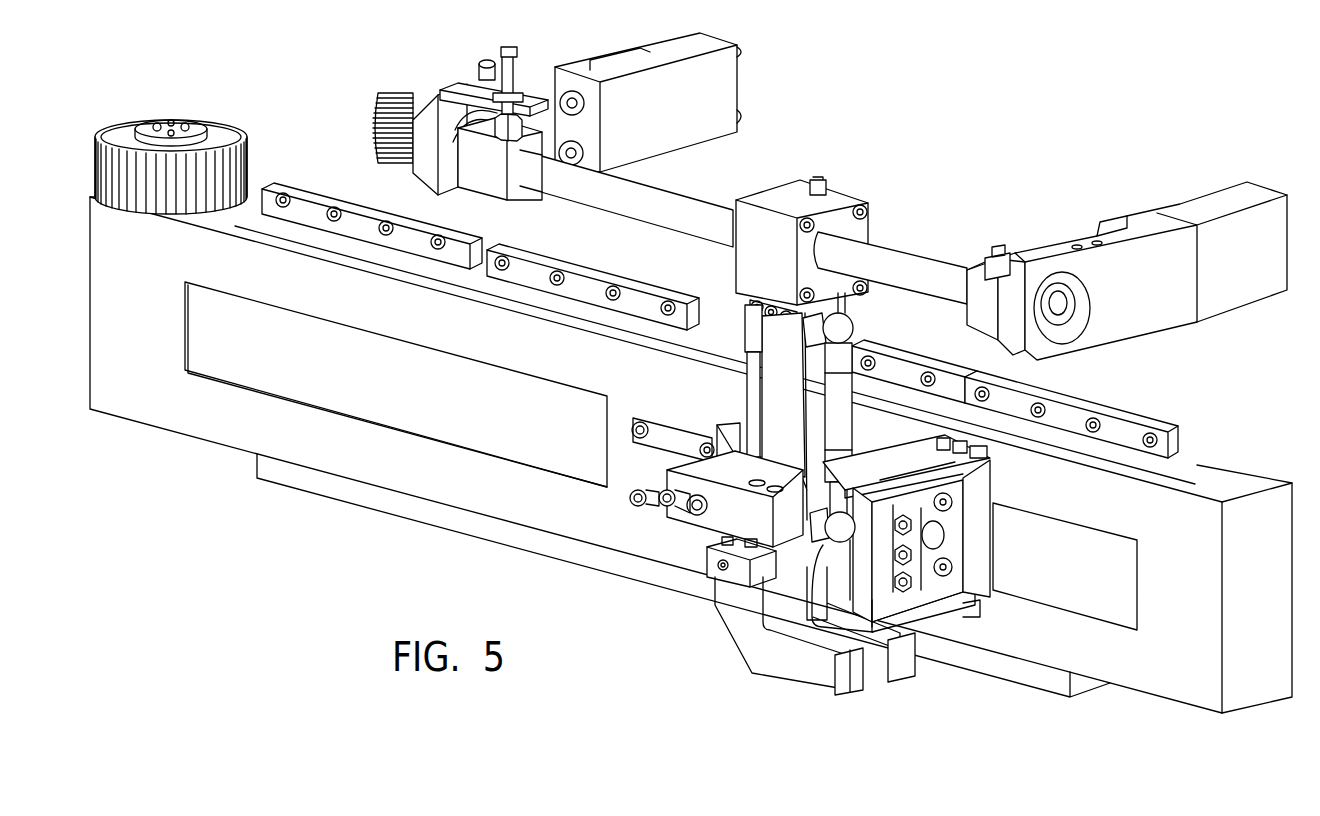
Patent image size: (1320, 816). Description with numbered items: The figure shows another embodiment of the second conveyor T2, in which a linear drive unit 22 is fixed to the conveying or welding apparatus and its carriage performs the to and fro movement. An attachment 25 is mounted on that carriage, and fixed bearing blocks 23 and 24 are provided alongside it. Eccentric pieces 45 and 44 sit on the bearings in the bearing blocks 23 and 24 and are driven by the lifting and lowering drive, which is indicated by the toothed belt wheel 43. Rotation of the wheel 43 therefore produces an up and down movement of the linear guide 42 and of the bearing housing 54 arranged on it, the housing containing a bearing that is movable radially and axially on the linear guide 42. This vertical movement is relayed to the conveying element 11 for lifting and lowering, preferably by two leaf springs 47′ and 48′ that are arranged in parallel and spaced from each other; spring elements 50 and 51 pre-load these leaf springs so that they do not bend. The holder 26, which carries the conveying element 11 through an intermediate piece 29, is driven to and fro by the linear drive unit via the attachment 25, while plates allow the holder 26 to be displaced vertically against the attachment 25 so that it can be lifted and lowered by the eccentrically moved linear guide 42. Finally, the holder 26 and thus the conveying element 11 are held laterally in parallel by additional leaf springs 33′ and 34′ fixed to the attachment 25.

The linear drive unit 22 is at (223, 433).
The second conveyor T2 is at (322, 190).
The toothed belt wheel 43 is at (395, 117).
The eccentric piece 45 is at (487, 180).
The bearing block 23 is at (614, 63).
The linear guide 42 is at (690, 205).
The bearing housing 54 is at (770, 195).
The eccentric piece 44 is at (967, 283).
The bearing block 24 is at (1140, 222).
The spring element 51 is at (740, 350).
The leaf spring 48′ is at (768, 399).
The holder 26 is at (818, 480).
The spring element 50 is at (848, 328).
The leaf spring 47′ is at (815, 361).
The intermediate piece 29 is at (716, 525).
The conveying element 11 is at (755, 648).
The attachment 25 is at (984, 554).
The leaf spring 34′ is at (897, 470).
The leaf spring 33′ is at (930, 603).